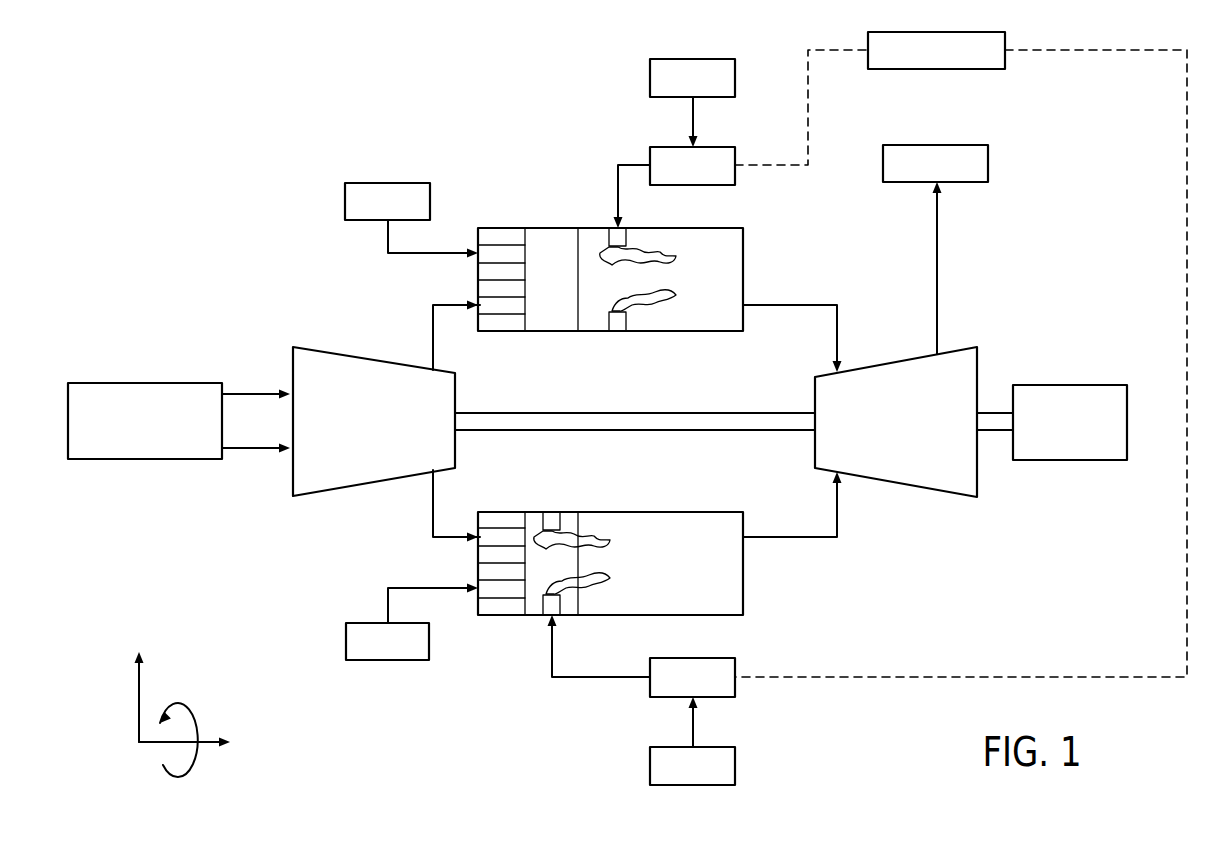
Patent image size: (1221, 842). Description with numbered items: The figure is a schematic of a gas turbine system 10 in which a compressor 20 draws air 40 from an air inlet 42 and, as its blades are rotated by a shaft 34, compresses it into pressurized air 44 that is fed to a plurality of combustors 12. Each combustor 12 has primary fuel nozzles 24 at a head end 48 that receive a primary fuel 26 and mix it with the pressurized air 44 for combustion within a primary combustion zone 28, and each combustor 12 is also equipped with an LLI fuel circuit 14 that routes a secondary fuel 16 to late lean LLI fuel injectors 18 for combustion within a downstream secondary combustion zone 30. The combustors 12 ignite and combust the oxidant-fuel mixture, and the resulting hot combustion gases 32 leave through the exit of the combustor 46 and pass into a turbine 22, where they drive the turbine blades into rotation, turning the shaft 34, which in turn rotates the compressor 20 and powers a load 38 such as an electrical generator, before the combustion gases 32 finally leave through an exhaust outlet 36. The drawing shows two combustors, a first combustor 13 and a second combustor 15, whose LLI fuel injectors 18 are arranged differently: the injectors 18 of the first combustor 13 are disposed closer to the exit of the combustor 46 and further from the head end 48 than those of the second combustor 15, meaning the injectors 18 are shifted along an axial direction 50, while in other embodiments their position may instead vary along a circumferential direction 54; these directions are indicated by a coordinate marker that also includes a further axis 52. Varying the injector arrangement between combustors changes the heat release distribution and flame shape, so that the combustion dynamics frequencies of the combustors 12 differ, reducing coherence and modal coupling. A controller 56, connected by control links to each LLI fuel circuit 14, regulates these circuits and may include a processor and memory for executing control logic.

The gas turbine system 10 is at (297, 602).
The combustor 12 is at (657, 393).
The first combustor 13 is at (745, 278).
The LLI fuel circuit 14 is at (672, 147).
The second combustor 15 is at (743, 523).
The secondary fuel 16 is at (672, 58).
The LLI fuel injector 18 is at (620, 233).
The compressor 20 is at (345, 490).
The turbine 22 is at (895, 483).
The primary fuel nozzle 24 is at (492, 277).
The primary fuel 26 is at (386, 183).
The primary combustion zone 28 is at (536, 292).
The secondary combustion zone 30 is at (701, 292).
The hot combustion gases 32 is at (808, 305).
The shaft 34 is at (997, 413).
The exhaust outlet 36 is at (937, 145).
The load 38 is at (1068, 385).
The air 40 is at (240, 447).
The air inlet 42 is at (145, 383).
The pressurized air 44 is at (433, 335).
The exit of the combustor 46 is at (757, 320).
The head end 48 is at (462, 332).
The axial direction 50 is at (158, 745).
The radial direction 52 is at (139, 703).
The circumferential direction 54 is at (193, 705).
The controller 56 is at (937, 69).